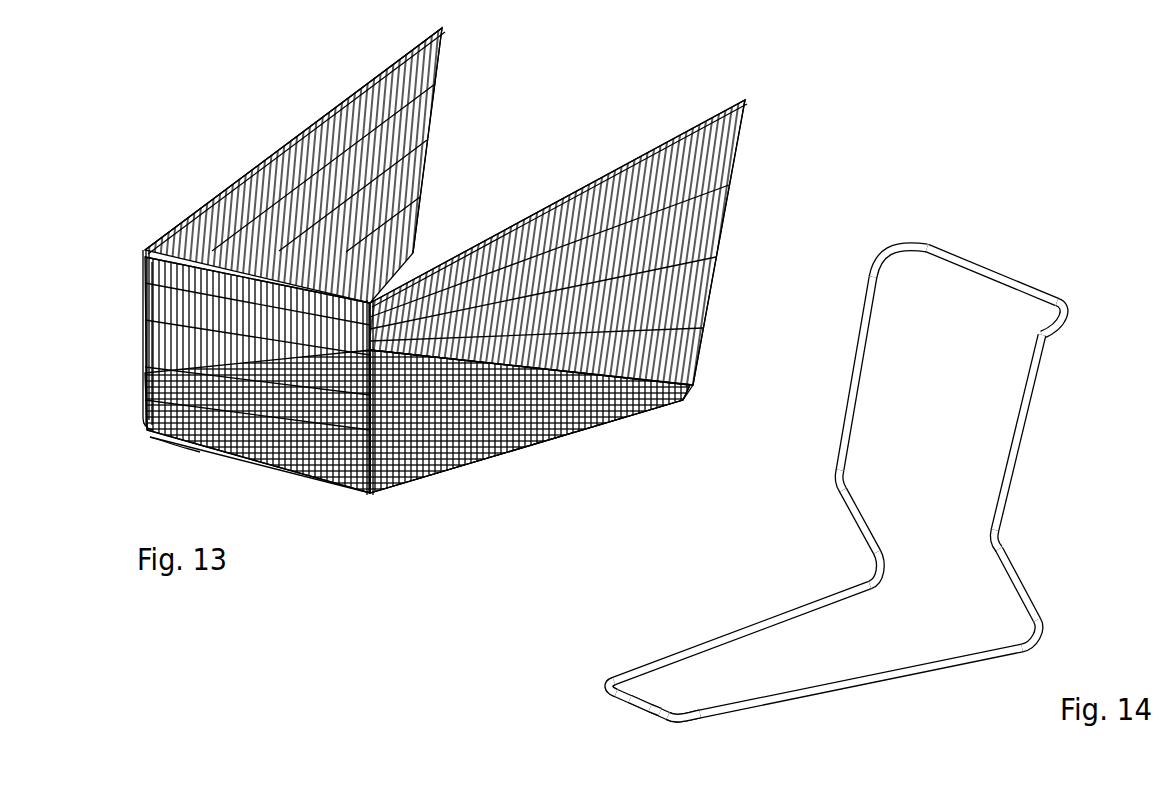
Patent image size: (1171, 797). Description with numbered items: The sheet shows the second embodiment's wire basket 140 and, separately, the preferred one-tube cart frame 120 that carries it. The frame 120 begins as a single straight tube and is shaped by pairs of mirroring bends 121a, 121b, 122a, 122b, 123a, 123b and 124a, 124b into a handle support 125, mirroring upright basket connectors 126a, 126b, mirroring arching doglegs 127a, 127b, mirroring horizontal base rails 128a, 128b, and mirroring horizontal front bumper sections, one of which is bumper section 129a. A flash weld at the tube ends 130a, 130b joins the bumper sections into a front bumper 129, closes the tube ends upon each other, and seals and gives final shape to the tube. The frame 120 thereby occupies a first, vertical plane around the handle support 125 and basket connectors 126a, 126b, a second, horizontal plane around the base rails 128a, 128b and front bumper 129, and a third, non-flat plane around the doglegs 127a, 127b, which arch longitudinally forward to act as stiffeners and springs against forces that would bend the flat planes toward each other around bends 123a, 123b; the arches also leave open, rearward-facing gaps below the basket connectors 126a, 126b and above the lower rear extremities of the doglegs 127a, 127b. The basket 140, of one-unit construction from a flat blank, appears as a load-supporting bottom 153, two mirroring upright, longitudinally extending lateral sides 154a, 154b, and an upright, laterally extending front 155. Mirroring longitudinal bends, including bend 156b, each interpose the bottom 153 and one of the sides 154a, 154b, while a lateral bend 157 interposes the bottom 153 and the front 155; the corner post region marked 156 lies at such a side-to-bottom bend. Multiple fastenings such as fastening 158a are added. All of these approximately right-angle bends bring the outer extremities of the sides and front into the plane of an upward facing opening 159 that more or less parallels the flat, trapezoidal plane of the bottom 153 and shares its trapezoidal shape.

In FIG. 14, the cart frame 120 is at (822, 485).
In FIG. 14, the bend 121a is at (897, 236).
In FIG. 14, the bend 121b is at (1073, 308).
In FIG. 14, the bend 122a is at (838, 486).
In FIG. 14, the bend 122b is at (986, 541).
In FIG. 14, the bend 123a is at (875, 571).
In FIG. 14, the bend 123b is at (1026, 623).
In FIG. 14, the bend 124a is at (601, 681).
In FIG. 14, the bend 124b is at (692, 726).
In FIG. 14, the handle support 125 is at (1006, 268).
In FIG. 14, the basket connector 126a is at (867, 395).
In FIG. 14, the basket connector 126b is at (1022, 452).
In FIG. 14, the arching dogleg 127a is at (872, 519).
In FIG. 14, the arching dogleg 127b is at (1019, 583).
In FIG. 14, the base rail 128a is at (784, 613).
In FIG. 14, the base rail 128b is at (892, 662).
In FIG. 14, the front bumper 129 is at (669, 702).
In FIG. 14, the front bumper section 129a is at (601, 699).
In FIG. 14, the tube end 130a is at (648, 710).
In FIG. 14, the tube end 130b is at (655, 710).
In FIG. 13, the basket 140 is at (521, 470).
In FIG. 13, the basket bottom 153 is at (405, 398).
In FIG. 13, the basket side 154a is at (432, 144).
In FIG. 13, the basket side 154b is at (700, 120).
In FIG. 13, the basket front 155 is at (150, 386).
In FIG. 13, the corner post 156 is at (408, 342).
In FIG. 13, the bend 156b is at (681, 402).
In FIG. 13, the bend 157 is at (157, 450).
In FIG. 13, the fastening 158a is at (146, 250).
In FIG. 13, the upward facing opening 159 is at (268, 170).